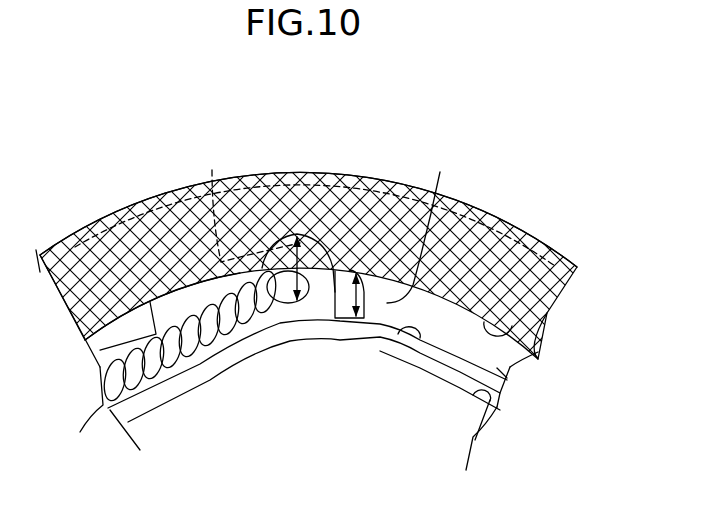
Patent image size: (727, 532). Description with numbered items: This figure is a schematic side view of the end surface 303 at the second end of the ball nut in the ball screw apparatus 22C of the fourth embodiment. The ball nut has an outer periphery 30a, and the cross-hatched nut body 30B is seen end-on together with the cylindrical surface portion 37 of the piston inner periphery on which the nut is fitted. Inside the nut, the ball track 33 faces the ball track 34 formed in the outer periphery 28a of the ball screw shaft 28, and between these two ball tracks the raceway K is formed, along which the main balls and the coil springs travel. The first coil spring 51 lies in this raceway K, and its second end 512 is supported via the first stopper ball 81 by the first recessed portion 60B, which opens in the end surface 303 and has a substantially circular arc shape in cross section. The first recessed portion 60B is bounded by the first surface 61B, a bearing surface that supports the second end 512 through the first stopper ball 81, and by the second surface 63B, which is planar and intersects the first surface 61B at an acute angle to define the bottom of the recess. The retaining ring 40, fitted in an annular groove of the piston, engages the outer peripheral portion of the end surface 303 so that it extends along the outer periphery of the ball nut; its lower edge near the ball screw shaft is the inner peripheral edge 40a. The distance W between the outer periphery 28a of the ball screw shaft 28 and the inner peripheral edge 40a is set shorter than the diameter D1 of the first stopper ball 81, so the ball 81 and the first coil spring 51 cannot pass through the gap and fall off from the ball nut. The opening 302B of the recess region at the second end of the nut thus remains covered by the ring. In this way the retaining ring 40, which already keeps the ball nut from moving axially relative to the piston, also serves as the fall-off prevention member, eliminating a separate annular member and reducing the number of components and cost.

The retaining ring 40 is at (543, 237).
The ball screw apparatus 22C is at (268, 166).
The lip portion 30B is at (166, 179).
The outer periphery 30a is at (128, 207).
The cylindrical surface portion 37 is at (78, 241).
The second surface 63B is at (240, 200).
The first surface 61B is at (328, 300).
The end surface 303 is at (470, 165).
The diameter D1 is at (299, 306).
The first stopper ball 81 is at (323, 270).
The distance W is at (365, 320).
The ball track 33 is at (104, 380).
The ball track 34 is at (563, 428).
The ball screw shaft 28 is at (475, 438).
The groove portion 302B is at (462, 363).
The outer periphery 28a is at (420, 326).
The inner peripheral edge 40a is at (503, 328).
The raceway K is at (155, 333).
The first recessed portion 60B is at (196, 297).
The first coil spring 51 is at (186, 368).
The second end 512 is at (272, 320).